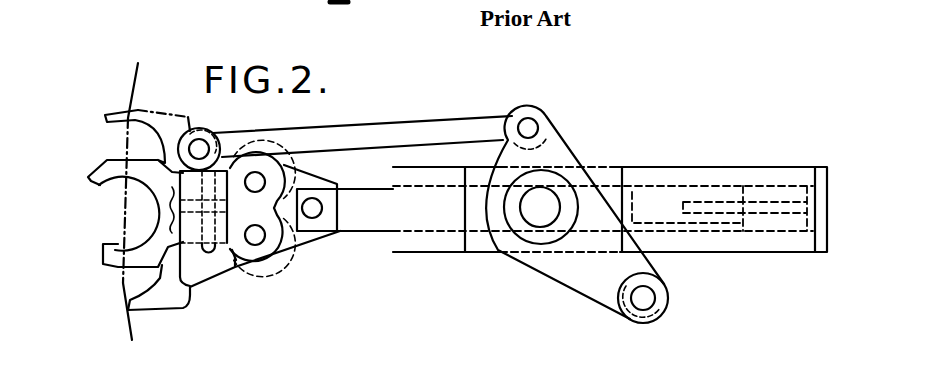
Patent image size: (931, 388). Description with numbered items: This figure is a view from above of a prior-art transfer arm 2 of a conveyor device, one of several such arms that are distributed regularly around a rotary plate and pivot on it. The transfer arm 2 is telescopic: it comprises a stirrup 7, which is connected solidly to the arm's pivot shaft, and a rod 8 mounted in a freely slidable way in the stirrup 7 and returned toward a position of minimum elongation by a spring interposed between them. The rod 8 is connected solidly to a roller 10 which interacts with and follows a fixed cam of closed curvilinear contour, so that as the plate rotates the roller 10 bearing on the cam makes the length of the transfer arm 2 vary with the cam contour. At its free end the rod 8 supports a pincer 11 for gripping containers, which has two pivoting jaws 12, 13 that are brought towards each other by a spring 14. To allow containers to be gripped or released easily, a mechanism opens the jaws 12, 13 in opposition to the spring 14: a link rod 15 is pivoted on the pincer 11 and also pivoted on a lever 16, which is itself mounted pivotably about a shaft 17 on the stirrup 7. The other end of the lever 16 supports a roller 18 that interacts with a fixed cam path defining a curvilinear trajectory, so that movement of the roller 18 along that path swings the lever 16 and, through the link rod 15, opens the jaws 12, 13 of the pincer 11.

The transfer arm 2 is at (597, 197).
The stirrup 7 is at (447, 242).
The rod 8 is at (370, 210).
The roller 10 is at (500, 168).
The pincer 11 is at (147, 278).
The jaw 12 is at (105, 168).
The jaw 13 is at (108, 255).
The spring 14 is at (232, 207).
The link rod 15 is at (382, 135).
The lever 16 is at (610, 262).
The shaft 17 is at (537, 213).
The roller 18 is at (657, 279).